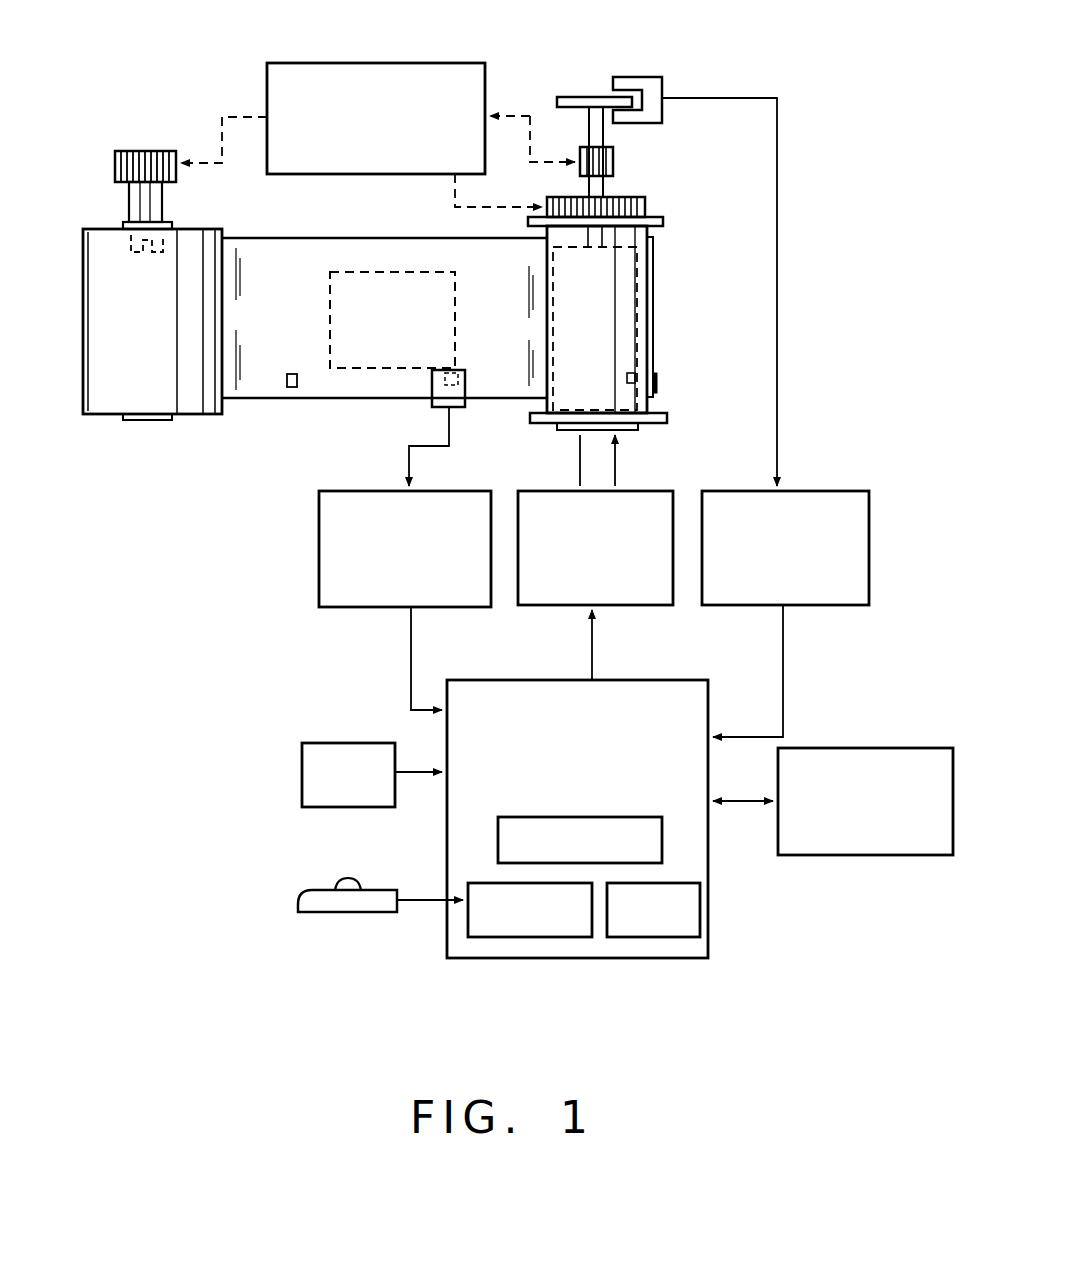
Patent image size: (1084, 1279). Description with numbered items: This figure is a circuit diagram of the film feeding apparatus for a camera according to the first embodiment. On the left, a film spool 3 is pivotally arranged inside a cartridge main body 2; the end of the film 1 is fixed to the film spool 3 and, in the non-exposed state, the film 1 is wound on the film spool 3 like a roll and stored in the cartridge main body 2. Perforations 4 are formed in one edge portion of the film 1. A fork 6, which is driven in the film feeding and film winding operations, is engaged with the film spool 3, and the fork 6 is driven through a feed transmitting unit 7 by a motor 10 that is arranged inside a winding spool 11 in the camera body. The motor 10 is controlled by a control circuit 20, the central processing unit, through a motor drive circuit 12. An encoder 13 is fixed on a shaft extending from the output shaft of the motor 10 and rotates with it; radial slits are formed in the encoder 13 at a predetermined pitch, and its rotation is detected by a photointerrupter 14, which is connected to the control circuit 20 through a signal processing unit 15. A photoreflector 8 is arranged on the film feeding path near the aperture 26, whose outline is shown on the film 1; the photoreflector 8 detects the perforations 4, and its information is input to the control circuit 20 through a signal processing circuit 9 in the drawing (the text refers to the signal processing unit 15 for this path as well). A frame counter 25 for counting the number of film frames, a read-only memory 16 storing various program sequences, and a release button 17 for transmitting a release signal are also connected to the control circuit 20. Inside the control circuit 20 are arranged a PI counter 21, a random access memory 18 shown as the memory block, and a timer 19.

The film 1 is at (335, 238).
The cartridge main body 2 is at (95, 418).
The film spool 3 is at (124, 225).
The perforation 4 is at (297, 380).
The fork 6 is at (138, 256).
The feed transmitting unit 7 is at (428, 63).
The photoreflector 8 is at (460, 407).
The signal processing circuit 9 is at (319, 558).
The motor 10 is at (657, 320).
The winding spool 11 is at (645, 230).
The motor drive circuit 12 is at (650, 490).
The encoder 13 is at (570, 97).
The photointerrupter 14 is at (650, 88).
The signal processing unit 15 is at (812, 490).
The read-only memory 16 is at (318, 743).
The release button 17 is at (345, 912).
The random access memory 18 is at (522, 937).
The timer 19 is at (643, 937).
The control circuit 20 is at (708, 862).
The PI counter 21 is at (498, 840).
The frame counter 25 is at (858, 748).
The aperture 26 is at (455, 320).